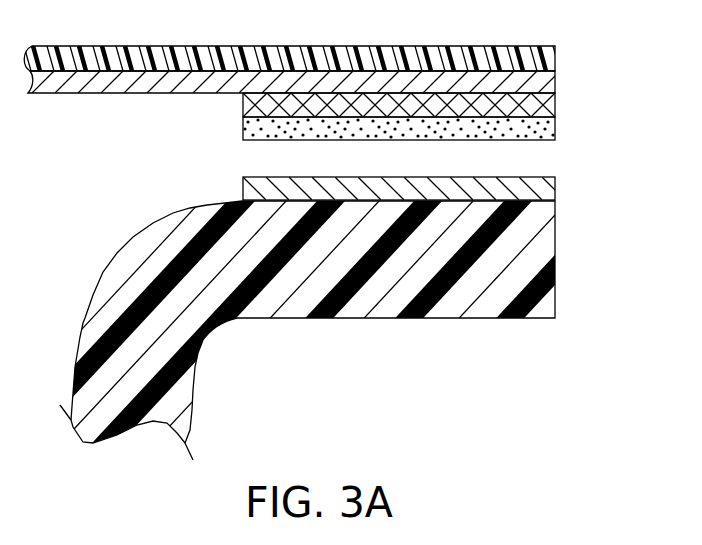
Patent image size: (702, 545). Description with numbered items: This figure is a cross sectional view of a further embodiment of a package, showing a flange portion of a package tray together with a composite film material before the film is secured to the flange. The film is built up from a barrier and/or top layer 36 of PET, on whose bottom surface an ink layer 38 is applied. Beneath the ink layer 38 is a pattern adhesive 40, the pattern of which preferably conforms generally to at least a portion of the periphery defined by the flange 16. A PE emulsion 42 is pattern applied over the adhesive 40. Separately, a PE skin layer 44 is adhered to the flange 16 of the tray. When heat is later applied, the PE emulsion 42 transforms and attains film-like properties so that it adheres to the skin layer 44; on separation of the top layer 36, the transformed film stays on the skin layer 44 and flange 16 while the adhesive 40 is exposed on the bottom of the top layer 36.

The top layer 36 is at (555, 52).
The ink layer 38 is at (555, 80).
The pattern adhesive 40 is at (555, 100).
The PE emulsion 42 is at (555, 128).
The PE skin layer 44 is at (555, 189).
The flange 16 is at (547, 298).